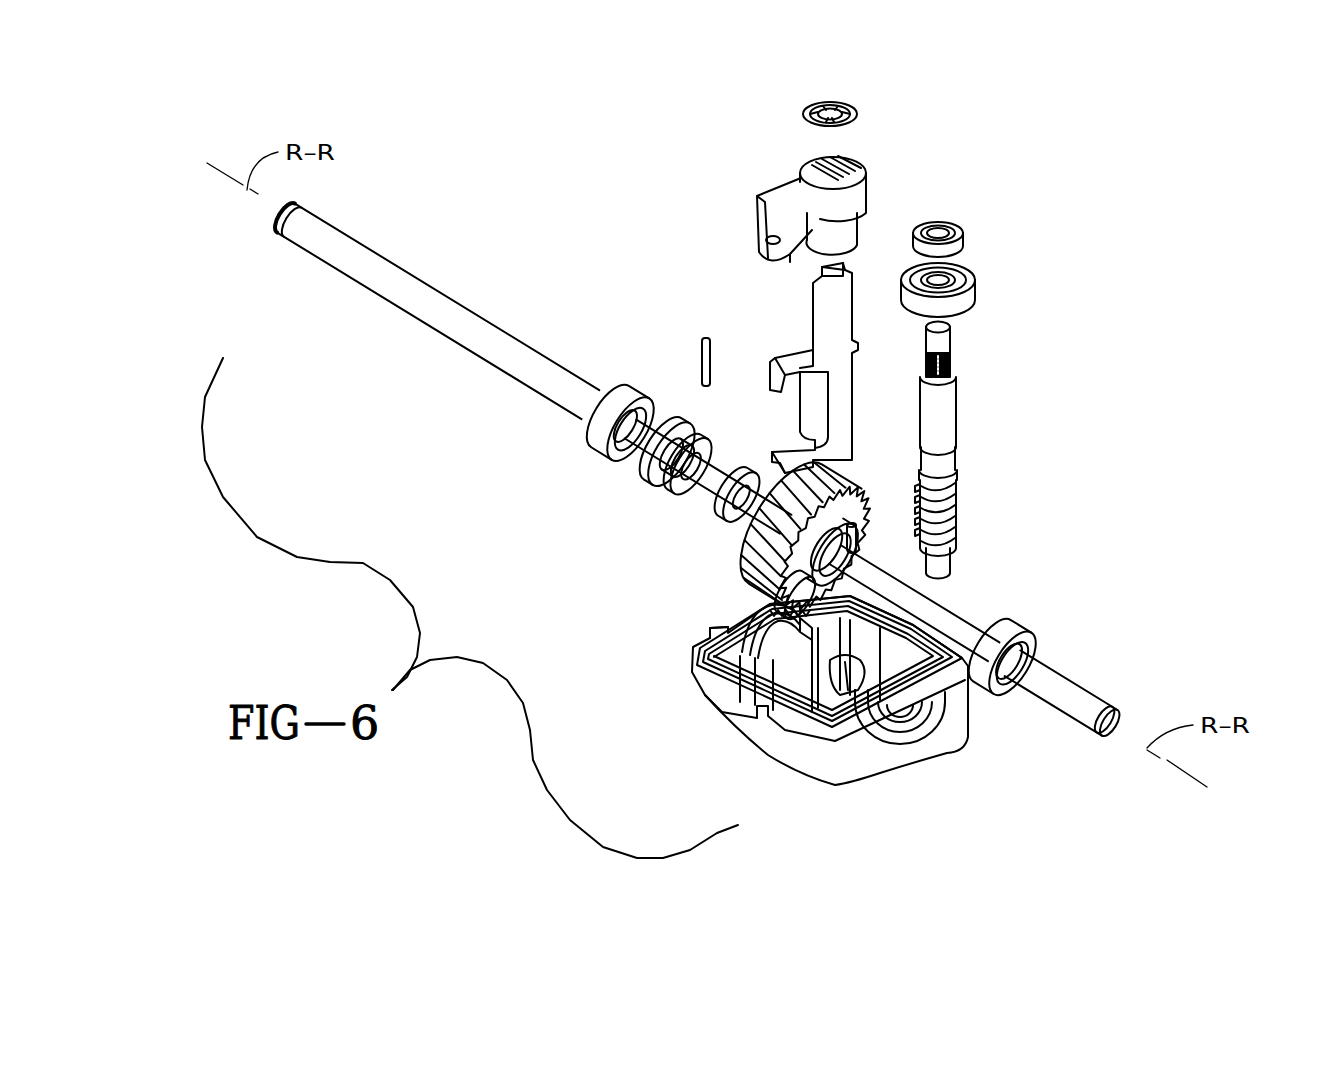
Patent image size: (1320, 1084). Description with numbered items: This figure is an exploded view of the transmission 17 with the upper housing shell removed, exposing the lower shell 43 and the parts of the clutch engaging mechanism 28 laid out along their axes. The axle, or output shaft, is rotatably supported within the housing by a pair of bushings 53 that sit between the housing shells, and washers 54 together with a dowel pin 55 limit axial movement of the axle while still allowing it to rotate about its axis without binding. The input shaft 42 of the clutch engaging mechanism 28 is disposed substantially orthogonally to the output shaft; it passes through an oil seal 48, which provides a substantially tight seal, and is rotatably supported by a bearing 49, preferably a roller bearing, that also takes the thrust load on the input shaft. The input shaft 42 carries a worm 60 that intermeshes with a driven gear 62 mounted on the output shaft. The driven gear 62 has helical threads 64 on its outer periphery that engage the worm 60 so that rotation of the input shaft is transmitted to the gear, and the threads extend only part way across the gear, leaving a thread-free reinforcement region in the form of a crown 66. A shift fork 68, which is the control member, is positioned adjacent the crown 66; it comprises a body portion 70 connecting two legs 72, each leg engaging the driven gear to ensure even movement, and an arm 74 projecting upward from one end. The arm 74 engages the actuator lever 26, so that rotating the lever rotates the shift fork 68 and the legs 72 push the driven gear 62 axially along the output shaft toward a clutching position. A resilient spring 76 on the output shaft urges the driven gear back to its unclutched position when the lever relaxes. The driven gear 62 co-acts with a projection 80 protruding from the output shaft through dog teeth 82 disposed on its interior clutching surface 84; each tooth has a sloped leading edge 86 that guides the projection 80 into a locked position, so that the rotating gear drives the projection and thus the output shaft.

The transmission 17 is at (600, 578).
The actuator lever 26 is at (857, 167).
The clutch engaging mechanism 28 is at (991, 450).
The input shaft 42 is at (953, 353).
The lower shell 43 is at (937, 747).
The oil seal 48 is at (963, 225).
The bearing 49 is at (977, 274).
The bushings 53 is at (638, 395).
The washers 54 is at (678, 503).
The dowel pin 55 is at (705, 337).
The worm 60 is at (957, 507).
The driven gear 62 is at (780, 536).
The helical threads 64 is at (850, 508).
The crown 66 is at (747, 581).
The shift fork 68 is at (838, 368).
The body portion 70 is at (853, 393).
The legs 72 is at (790, 352).
The arm 74 is at (855, 265).
The spring 76 is at (793, 597).
The projection 80 is at (858, 528).
The dog teeth 82 is at (716, 633).
The clutching surface 84 is at (890, 606).
The leading edge 86 is at (880, 595).